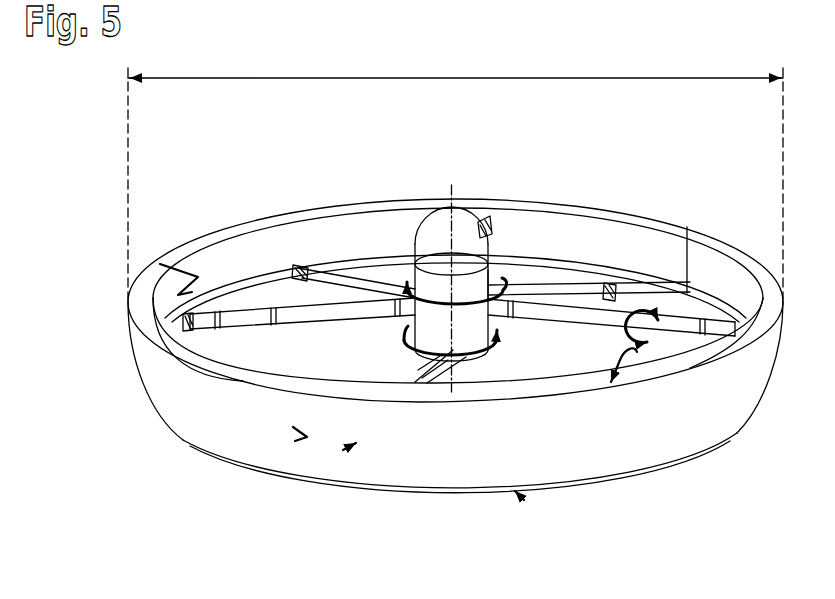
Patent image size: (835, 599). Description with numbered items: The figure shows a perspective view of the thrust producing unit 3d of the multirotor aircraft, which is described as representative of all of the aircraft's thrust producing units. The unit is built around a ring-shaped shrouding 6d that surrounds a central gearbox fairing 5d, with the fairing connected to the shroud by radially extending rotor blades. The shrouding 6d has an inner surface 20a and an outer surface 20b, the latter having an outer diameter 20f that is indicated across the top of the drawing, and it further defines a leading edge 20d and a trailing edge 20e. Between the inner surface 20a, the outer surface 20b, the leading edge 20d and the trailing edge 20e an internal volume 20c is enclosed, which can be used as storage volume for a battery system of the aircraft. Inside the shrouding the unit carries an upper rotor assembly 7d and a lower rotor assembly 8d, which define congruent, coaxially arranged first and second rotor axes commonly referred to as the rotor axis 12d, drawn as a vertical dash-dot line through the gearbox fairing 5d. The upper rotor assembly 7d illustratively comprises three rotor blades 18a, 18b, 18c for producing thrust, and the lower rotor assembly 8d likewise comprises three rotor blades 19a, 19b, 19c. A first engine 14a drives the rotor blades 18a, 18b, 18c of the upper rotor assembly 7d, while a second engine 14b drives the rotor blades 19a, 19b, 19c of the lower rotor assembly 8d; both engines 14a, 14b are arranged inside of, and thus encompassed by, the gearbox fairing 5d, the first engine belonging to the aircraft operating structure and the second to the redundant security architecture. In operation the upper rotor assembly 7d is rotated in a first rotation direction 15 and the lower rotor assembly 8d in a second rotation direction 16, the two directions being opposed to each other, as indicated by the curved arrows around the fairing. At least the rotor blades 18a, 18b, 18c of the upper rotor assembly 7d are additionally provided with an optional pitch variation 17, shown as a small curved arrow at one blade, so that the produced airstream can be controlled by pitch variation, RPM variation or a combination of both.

The thrust producing unit 3d is at (199, 226).
The gearbox fairing 5d is at (433, 241).
The shrouding 6d is at (678, 227).
The upper rotor assembly 7d is at (308, 325).
The lower rotor assembly 8d is at (606, 287).
The rotor axis 12d is at (451, 185).
The first engine 14a is at (409, 241).
The second engine 14b is at (485, 367).
The first rotation direction 15 is at (502, 278).
The second rotation direction 16 is at (413, 350).
The pitch variation 17 is at (637, 300).
The rotor blade 18a is at (290, 318).
The rotor blade 18b is at (490, 217).
The rotor blade 18c is at (685, 327).
The rotor blade 19a is at (300, 267).
The rotor blade 19b is at (627, 289).
The rotor blade 19c is at (430, 373).
The inner surface 20a is at (160, 264).
The outer surface 20b is at (293, 432).
The internal volume 20c is at (343, 450).
The leading edge 20d is at (637, 352).
The trailing edge 20e is at (524, 500).
The outer diameter 20f is at (482, 77).